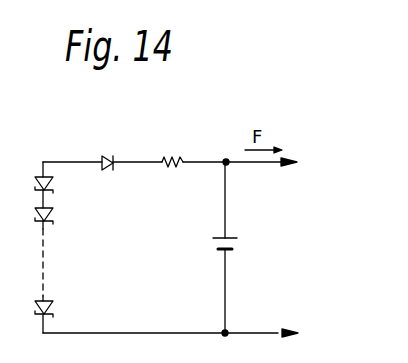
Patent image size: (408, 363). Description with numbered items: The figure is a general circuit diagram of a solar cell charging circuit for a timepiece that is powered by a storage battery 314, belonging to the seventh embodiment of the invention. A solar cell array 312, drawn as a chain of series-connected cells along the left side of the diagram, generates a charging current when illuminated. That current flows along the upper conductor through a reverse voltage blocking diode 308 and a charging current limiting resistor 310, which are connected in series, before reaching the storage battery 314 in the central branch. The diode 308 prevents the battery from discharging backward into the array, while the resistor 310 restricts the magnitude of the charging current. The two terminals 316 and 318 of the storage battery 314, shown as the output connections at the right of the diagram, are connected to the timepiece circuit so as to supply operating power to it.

The reverse voltage blocking diode 308 is at (112, 155).
The charging current limiting resistor 310 is at (182, 160).
The solar cell array 312 is at (50, 300).
The storage battery 314 is at (240, 243).
The terminal 316 is at (297, 162).
The terminal 318 is at (298, 333).